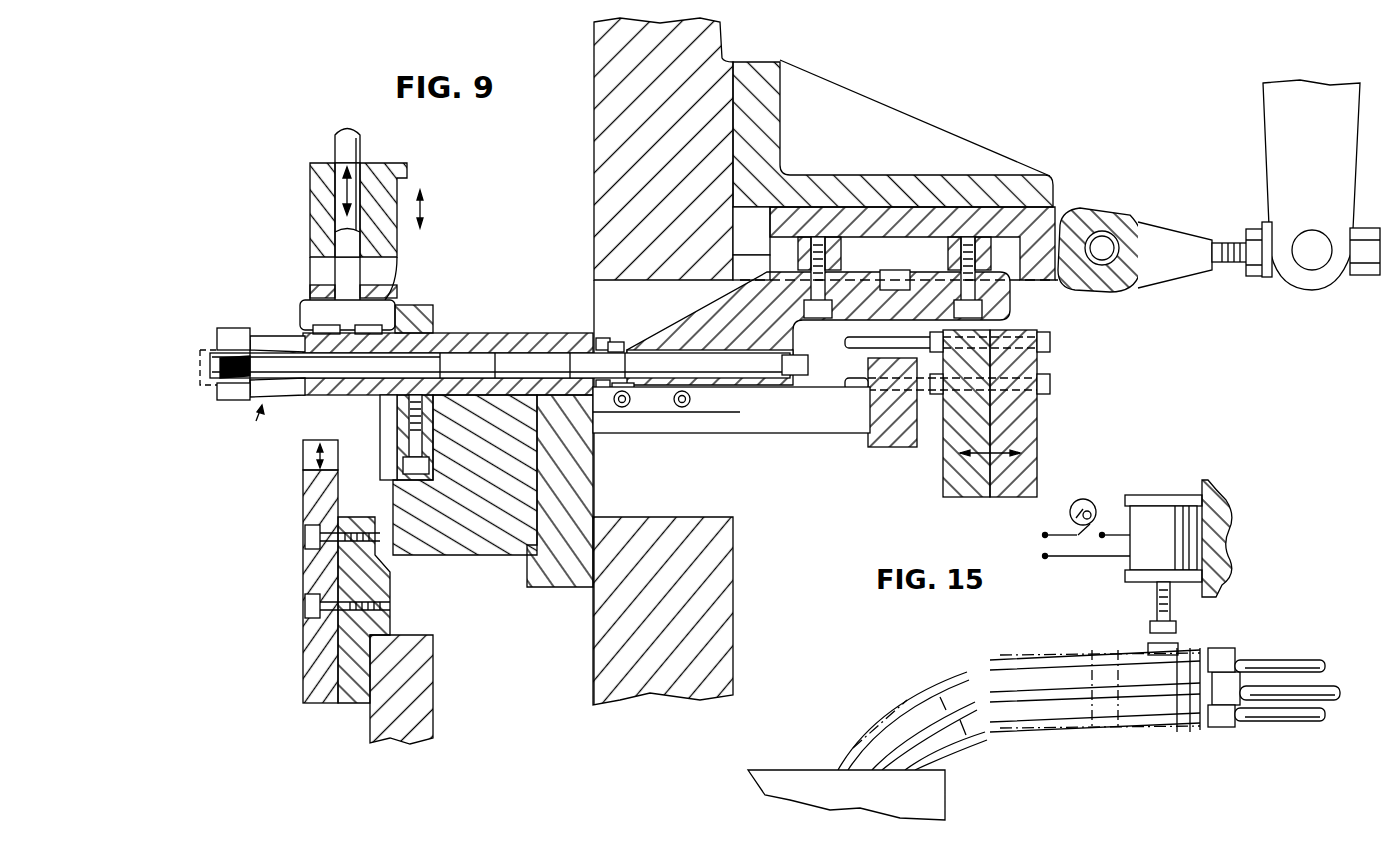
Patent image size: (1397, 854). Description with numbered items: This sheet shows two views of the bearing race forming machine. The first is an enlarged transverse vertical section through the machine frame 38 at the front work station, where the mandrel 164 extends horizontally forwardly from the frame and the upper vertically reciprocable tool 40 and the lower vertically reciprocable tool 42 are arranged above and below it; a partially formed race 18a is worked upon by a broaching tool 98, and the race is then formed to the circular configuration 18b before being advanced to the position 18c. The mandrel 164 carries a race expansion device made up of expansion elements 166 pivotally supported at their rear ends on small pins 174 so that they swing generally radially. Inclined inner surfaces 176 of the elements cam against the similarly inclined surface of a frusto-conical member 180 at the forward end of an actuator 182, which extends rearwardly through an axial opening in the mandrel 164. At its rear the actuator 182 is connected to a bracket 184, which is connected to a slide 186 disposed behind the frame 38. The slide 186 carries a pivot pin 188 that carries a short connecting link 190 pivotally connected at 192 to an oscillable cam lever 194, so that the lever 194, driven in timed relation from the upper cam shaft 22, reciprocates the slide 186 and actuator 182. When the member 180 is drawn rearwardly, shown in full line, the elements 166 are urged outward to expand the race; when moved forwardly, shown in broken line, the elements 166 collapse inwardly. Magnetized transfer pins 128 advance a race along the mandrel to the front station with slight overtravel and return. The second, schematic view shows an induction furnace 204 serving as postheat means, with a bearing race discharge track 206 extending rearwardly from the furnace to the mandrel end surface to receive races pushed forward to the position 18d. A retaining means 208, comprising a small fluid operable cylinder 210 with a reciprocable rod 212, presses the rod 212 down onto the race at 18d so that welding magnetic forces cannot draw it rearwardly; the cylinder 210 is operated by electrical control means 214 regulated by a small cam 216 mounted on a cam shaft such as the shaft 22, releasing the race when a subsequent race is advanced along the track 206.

In FIG. 9, the machine frame 38 is at (705, 75).
In FIG. 9, the upper vertically reciprocable tool 40 is at (412, 164).
In FIG. 9, the partially formed race 18a is at (388, 304).
In FIG. 9, the bearing race formed to circular configuration 18b is at (362, 298).
In FIG. 9, the bearing race at front work station position 18c is at (224, 334).
In FIG. 15, the bearing race at front work station position 18c is at (1232, 728).
In FIG. 15, the bearing race at track position 18d is at (1160, 728).
In FIG. 9, the actuator 182 is at (468, 352).
In FIG. 9, the inner surfaces 176 is at (247, 333).
In FIG. 9, the small pins 174 is at (298, 340).
In FIG. 9, the expansion elements 166 is at (217, 338).
In FIG. 15, the expansion elements 166 is at (1230, 660).
In FIG. 9, the frusto-conical member 180 is at (208, 378).
In FIG. 15, the frusto-conical member 180 is at (1210, 685).
In FIG. 9, the mandrel 164 is at (248, 428).
In FIG. 9, the lower vertically reciprocable tool 42 is at (303, 518).
In FIG. 9, the broaching tool 98 is at (728, 403).
In FIG. 9, the bracket 184 is at (990, 306).
In FIG. 9, the slide 186 is at (1053, 210).
In FIG. 9, the pivot pin 188 is at (1102, 240).
In FIG. 9, the connecting link 190 is at (1160, 265).
In FIG. 9, the pivotal connection 192 is at (1314, 262).
In FIG. 9, the cam lever 194 is at (1268, 158).
In FIG. 15, the fluid operable cylinder 210 is at (1153, 494).
In FIG. 15, the retaining means 208 is at (1240, 502).
In FIG. 15, the cam 216 is at (1071, 508).
In FIG. 15, the upper horizontal cam shaft 22 is at (1092, 500).
In FIG. 15, the electrical control means 214 is at (1078, 558).
In FIG. 15, the reciprocable rod 212 is at (1155, 602).
In FIG. 15, the bearing race discharge track 206 is at (930, 687).
In FIG. 15, the induction furnace 204 is at (795, 770).
In FIG. 15, the transfer pins 128 is at (1308, 664).